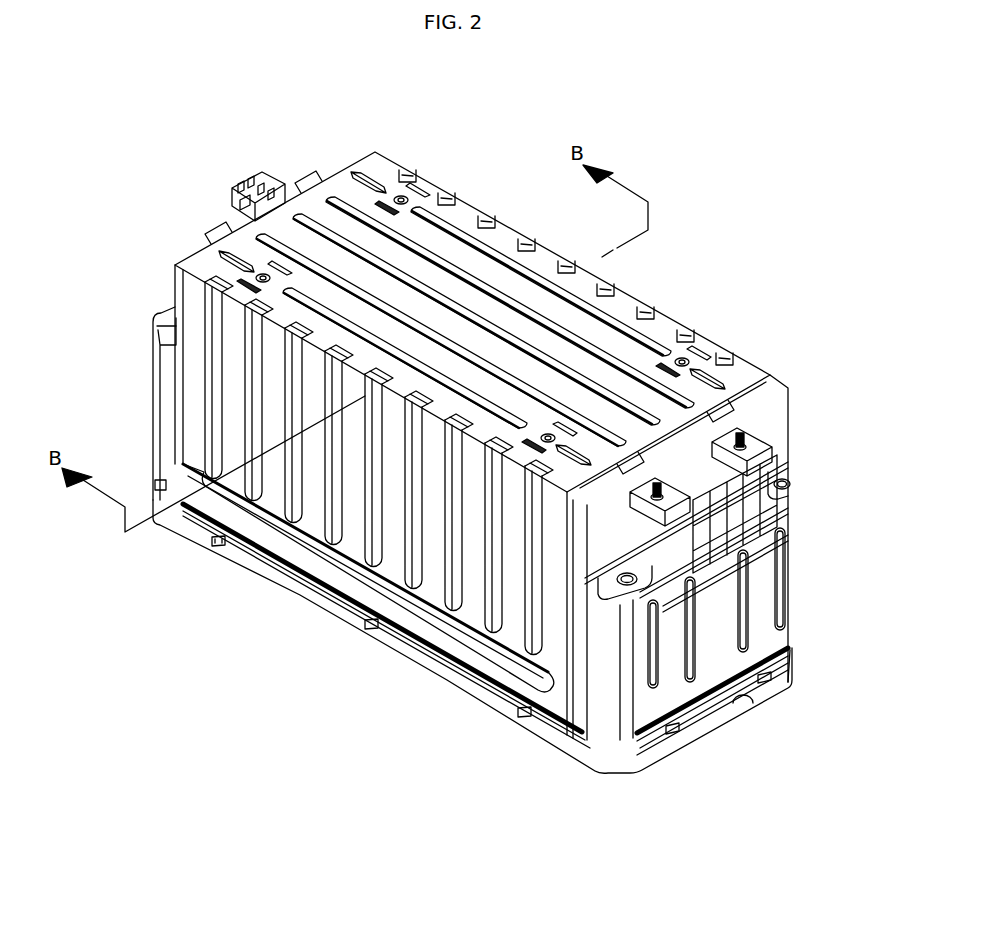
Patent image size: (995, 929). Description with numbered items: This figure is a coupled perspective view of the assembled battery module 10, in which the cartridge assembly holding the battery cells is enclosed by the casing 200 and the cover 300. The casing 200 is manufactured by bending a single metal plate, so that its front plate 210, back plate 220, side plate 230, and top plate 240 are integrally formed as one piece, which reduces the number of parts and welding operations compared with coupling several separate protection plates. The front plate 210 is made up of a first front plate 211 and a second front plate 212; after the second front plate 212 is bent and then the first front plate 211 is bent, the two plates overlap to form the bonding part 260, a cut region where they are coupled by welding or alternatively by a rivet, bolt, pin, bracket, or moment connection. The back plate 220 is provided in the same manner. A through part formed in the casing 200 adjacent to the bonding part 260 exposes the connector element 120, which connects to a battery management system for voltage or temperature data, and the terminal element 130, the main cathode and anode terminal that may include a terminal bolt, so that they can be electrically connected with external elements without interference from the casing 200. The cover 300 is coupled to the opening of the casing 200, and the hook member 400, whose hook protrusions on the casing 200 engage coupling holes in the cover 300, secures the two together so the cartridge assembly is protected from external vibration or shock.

The battery module 10 is at (245, 101).
The connector element 120 is at (262, 183).
The terminal element 130 is at (665, 497).
The casing 200 is at (654, 290).
The front plate 210 is at (750, 740).
The first front plate 211 is at (673, 683).
The second front plate 212 is at (768, 618).
The back plate 220 is at (156, 290).
The side plate 230 is at (433, 588).
The top plate 240 is at (457, 232).
The bonding part 260 is at (720, 583).
The cover 300 is at (484, 693).
The hook member 400 is at (220, 543).